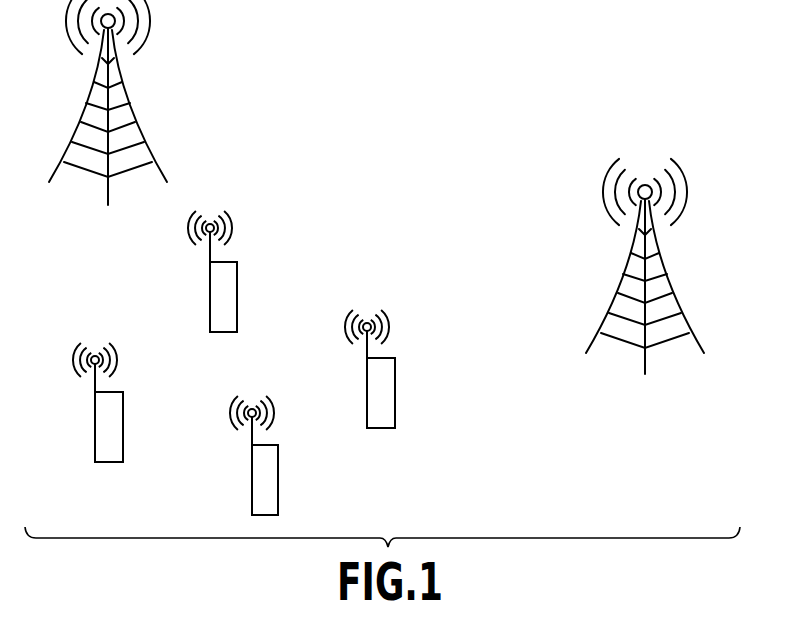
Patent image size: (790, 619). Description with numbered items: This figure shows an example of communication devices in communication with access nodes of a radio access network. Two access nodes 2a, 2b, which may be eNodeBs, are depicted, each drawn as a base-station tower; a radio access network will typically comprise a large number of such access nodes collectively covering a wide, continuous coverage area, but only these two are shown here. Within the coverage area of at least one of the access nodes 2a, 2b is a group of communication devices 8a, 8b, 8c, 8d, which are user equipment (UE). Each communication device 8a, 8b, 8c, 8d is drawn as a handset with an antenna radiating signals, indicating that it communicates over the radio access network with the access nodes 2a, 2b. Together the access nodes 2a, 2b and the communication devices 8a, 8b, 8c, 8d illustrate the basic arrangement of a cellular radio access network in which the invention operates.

The access node 2a is at (133, 108).
The access node 2b is at (668, 277).
The communication device 8a is at (237, 284).
The communication device 8b is at (123, 415).
The communication device 8c is at (278, 470).
The communication device 8d is at (395, 380).